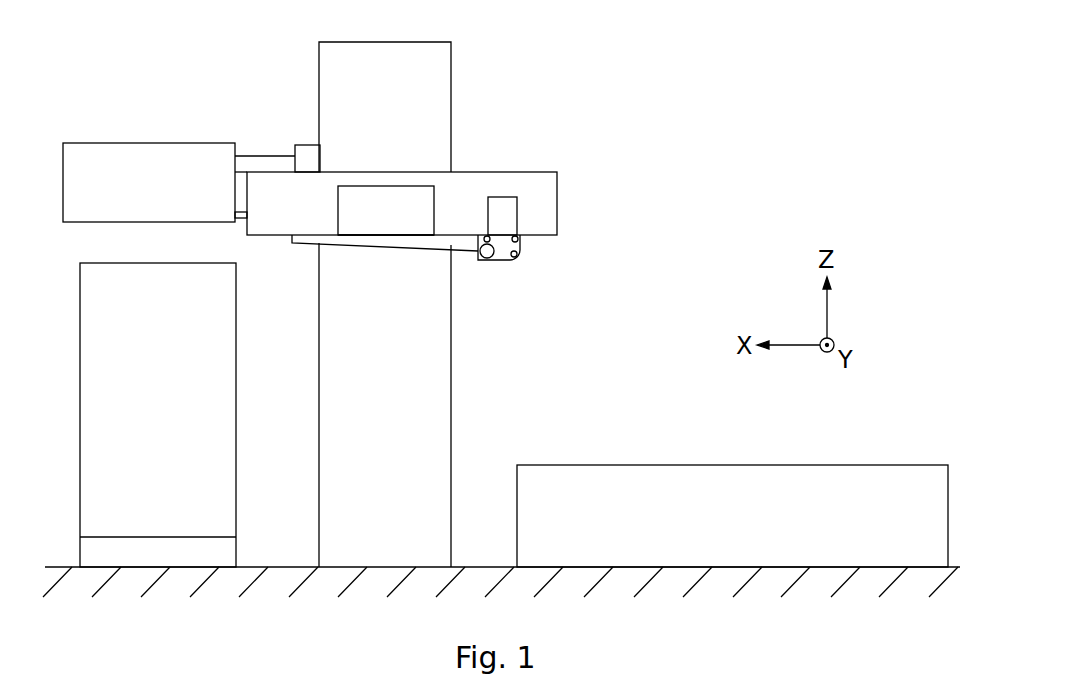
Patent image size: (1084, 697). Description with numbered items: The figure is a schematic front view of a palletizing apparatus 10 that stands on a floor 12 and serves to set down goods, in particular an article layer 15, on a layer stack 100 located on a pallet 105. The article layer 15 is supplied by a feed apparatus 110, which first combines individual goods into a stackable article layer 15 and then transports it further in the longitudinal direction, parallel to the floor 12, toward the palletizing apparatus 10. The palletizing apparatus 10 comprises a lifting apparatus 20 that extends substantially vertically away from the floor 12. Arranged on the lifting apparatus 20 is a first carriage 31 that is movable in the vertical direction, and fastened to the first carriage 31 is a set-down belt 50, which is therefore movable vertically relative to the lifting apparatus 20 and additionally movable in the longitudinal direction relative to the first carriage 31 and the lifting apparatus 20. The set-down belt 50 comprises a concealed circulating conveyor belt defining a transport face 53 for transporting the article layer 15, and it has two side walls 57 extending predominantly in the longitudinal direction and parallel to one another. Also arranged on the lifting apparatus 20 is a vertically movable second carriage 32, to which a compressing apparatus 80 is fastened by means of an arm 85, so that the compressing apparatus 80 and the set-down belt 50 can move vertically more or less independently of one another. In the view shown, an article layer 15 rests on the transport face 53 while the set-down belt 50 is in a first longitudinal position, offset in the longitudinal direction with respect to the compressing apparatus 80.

The palletizing apparatus 10 is at (714, 153).
The floor 12 is at (267, 566).
The article layer 15 is at (403, 200).
The lifting apparatus 20 is at (400, 446).
The first carriage 31 is at (498, 182).
The second carriage 32 is at (304, 153).
The set-down belt 50 is at (388, 258).
The transport face 53 is at (367, 232).
The side walls 57 is at (502, 262).
The compressing apparatus 80 is at (148, 141).
The arm 85 is at (255, 163).
The layer stack 100 is at (180, 375).
The pallet 105 is at (158, 546).
The feed apparatus 110 is at (761, 529).